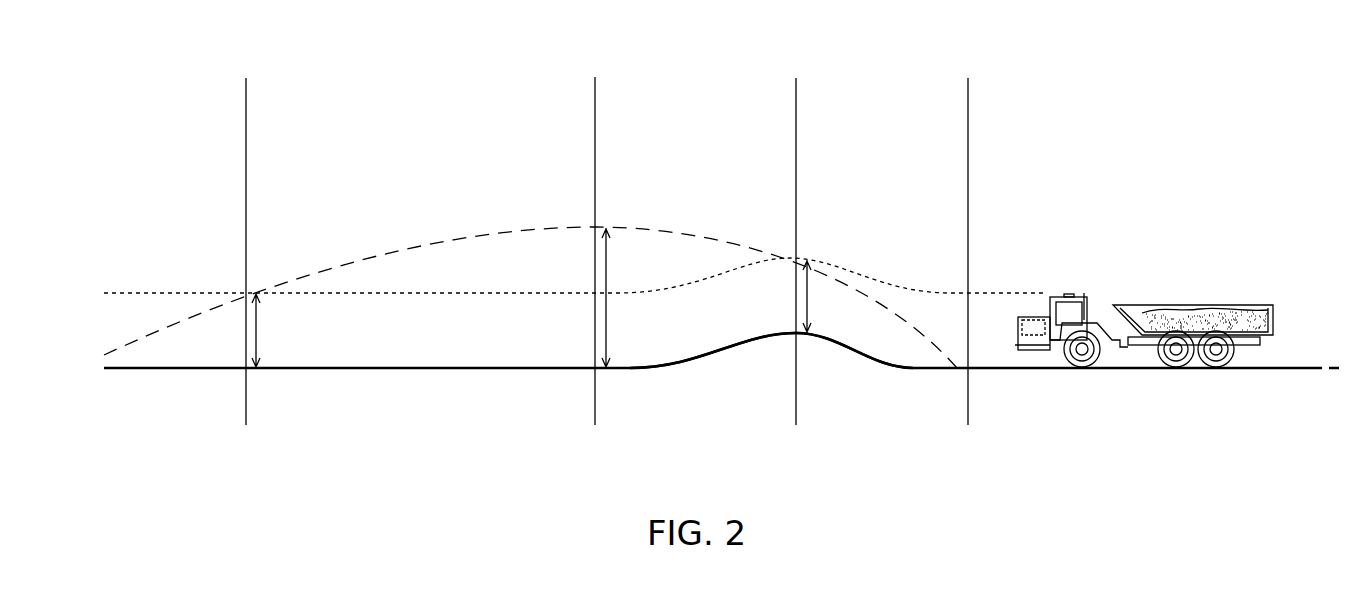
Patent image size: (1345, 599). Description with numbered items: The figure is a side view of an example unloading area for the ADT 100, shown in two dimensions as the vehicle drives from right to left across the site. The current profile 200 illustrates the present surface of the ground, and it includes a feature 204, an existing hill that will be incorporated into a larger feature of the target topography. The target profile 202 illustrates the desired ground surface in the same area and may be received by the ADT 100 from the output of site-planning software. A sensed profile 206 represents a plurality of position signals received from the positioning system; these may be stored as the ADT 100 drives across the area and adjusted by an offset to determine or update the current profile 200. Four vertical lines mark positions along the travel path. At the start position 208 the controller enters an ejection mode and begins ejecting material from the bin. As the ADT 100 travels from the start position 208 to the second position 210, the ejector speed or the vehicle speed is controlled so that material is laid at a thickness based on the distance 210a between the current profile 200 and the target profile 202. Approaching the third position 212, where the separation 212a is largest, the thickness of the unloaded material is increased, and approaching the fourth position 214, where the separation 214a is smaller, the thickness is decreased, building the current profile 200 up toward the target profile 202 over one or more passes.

The ADT 100 is at (1205, 227).
The current profile 200 is at (202, 368).
The target profile 202 is at (383, 188).
The feature 204 is at (750, 347).
The sensed profile 206 is at (870, 272).
The start position 208 is at (968, 100).
The second position 210 is at (796, 97).
The distance 210a is at (807, 302).
The third position 212 is at (595, 90).
The height difference at third position 212a is at (607, 307).
The fourth position 214 is at (246, 100).
The height difference at fourth position 214a is at (258, 335).